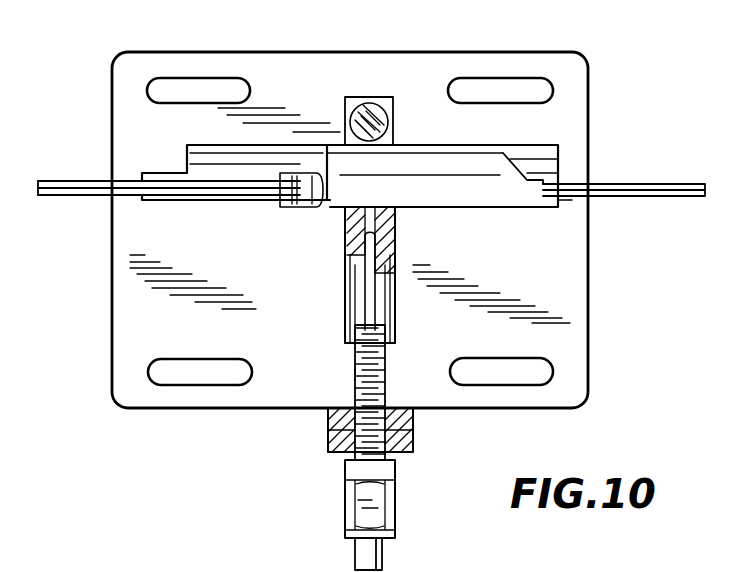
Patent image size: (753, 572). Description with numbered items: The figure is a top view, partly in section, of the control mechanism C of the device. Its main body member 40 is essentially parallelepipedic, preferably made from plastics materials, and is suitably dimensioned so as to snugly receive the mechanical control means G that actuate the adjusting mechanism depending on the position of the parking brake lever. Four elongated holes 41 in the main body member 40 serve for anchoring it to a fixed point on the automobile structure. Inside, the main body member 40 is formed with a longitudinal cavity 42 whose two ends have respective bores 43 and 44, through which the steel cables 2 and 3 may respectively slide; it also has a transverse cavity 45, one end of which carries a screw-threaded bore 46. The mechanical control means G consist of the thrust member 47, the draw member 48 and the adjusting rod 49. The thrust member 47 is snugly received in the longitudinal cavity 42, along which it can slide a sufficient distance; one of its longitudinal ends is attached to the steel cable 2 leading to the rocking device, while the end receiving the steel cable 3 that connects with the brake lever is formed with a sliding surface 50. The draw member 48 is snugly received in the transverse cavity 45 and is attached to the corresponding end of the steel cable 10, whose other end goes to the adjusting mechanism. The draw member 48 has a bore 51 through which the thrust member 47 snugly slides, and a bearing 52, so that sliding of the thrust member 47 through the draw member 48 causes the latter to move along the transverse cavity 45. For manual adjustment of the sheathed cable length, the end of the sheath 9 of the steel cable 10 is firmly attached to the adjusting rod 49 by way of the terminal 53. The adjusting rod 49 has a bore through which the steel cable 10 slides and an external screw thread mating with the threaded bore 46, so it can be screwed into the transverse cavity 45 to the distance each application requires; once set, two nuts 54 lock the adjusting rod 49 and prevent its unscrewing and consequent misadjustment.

The steel cable 2 is at (80, 198).
The steel cable 3 is at (632, 184).
The sheath 9 is at (382, 552).
The steel cable 10 is at (366, 300).
The main body member 40 is at (233, 52).
The elongated holes 41 is at (188, 78).
The longitudinal cavity 42 is at (267, 143).
The bore 43 is at (124, 174).
The bore 44 is at (570, 198).
The transverse cavity 45 is at (392, 315).
The bore 46 is at (355, 372).
The thrust member 47 is at (438, 160).
The draw member 48 is at (390, 100).
The adjusting rod 49 is at (385, 378).
The sliding surface 50 is at (518, 150).
The bore 51 is at (343, 140).
The bearing 52 is at (365, 104).
The terminal 53 is at (388, 503).
The nuts 54 is at (415, 417).
The control mechanism C is at (590, 96).
The mechanical control means G is at (332, 210).